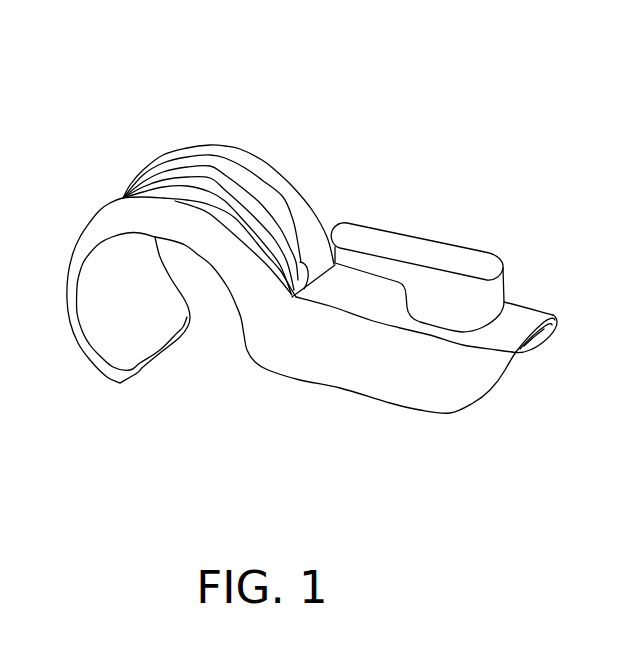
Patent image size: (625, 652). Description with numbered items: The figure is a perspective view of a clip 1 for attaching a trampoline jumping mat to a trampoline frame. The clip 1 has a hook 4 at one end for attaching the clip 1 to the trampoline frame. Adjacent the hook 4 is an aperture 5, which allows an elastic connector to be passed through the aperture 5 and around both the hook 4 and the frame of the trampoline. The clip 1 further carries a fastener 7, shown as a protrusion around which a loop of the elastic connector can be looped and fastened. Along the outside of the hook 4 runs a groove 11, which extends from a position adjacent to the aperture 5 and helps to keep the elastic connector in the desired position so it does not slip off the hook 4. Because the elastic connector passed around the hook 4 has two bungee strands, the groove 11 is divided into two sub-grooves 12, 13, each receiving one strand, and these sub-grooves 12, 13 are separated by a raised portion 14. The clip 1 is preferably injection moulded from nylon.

The clip 1 is at (297, 215).
The hook 4 is at (100, 297).
The aperture 5 is at (330, 262).
The fastener 7 is at (433, 250).
The groove 11 is at (163, 185).
The sub-groove 12 is at (181, 197).
The sub-groove 13 is at (222, 192).
The raised portion 14 is at (247, 218).